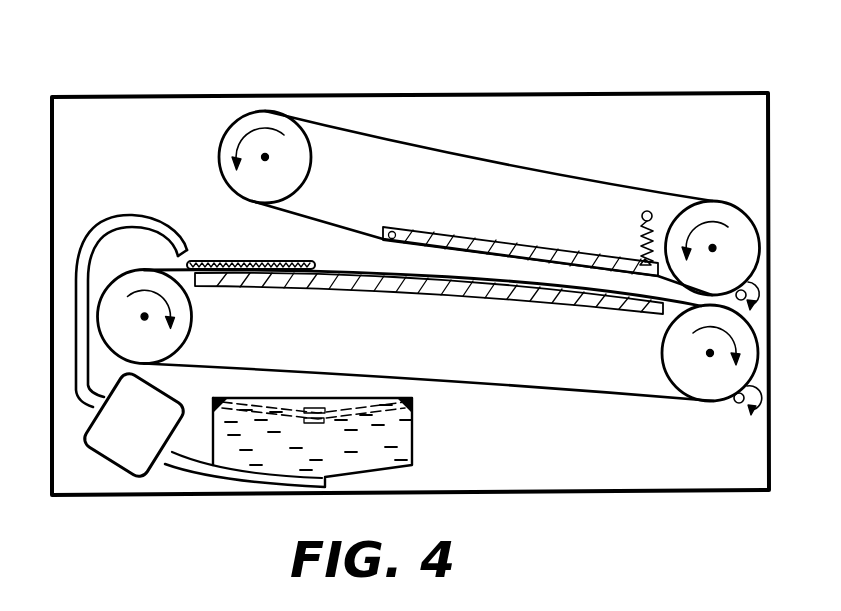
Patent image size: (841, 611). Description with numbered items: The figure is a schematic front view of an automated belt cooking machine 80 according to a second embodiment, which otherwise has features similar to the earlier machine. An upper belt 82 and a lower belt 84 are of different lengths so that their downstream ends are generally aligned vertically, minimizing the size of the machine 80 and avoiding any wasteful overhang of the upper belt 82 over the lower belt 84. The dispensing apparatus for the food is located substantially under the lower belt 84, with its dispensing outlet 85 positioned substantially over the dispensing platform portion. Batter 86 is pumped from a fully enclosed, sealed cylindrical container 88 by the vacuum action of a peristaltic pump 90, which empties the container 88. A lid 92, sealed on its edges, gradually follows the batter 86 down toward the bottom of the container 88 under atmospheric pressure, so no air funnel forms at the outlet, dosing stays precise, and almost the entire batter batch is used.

The automated belt cooking machine 80 is at (717, 66).
The upper belt 82 is at (516, 162).
The lower belt 84 is at (563, 390).
The dispensing outlet 85 is at (163, 228).
The batter 86 is at (250, 266).
The cylindrical container 88 is at (412, 435).
The peristaltic pump 90 is at (103, 453).
The lid 92 is at (360, 408).